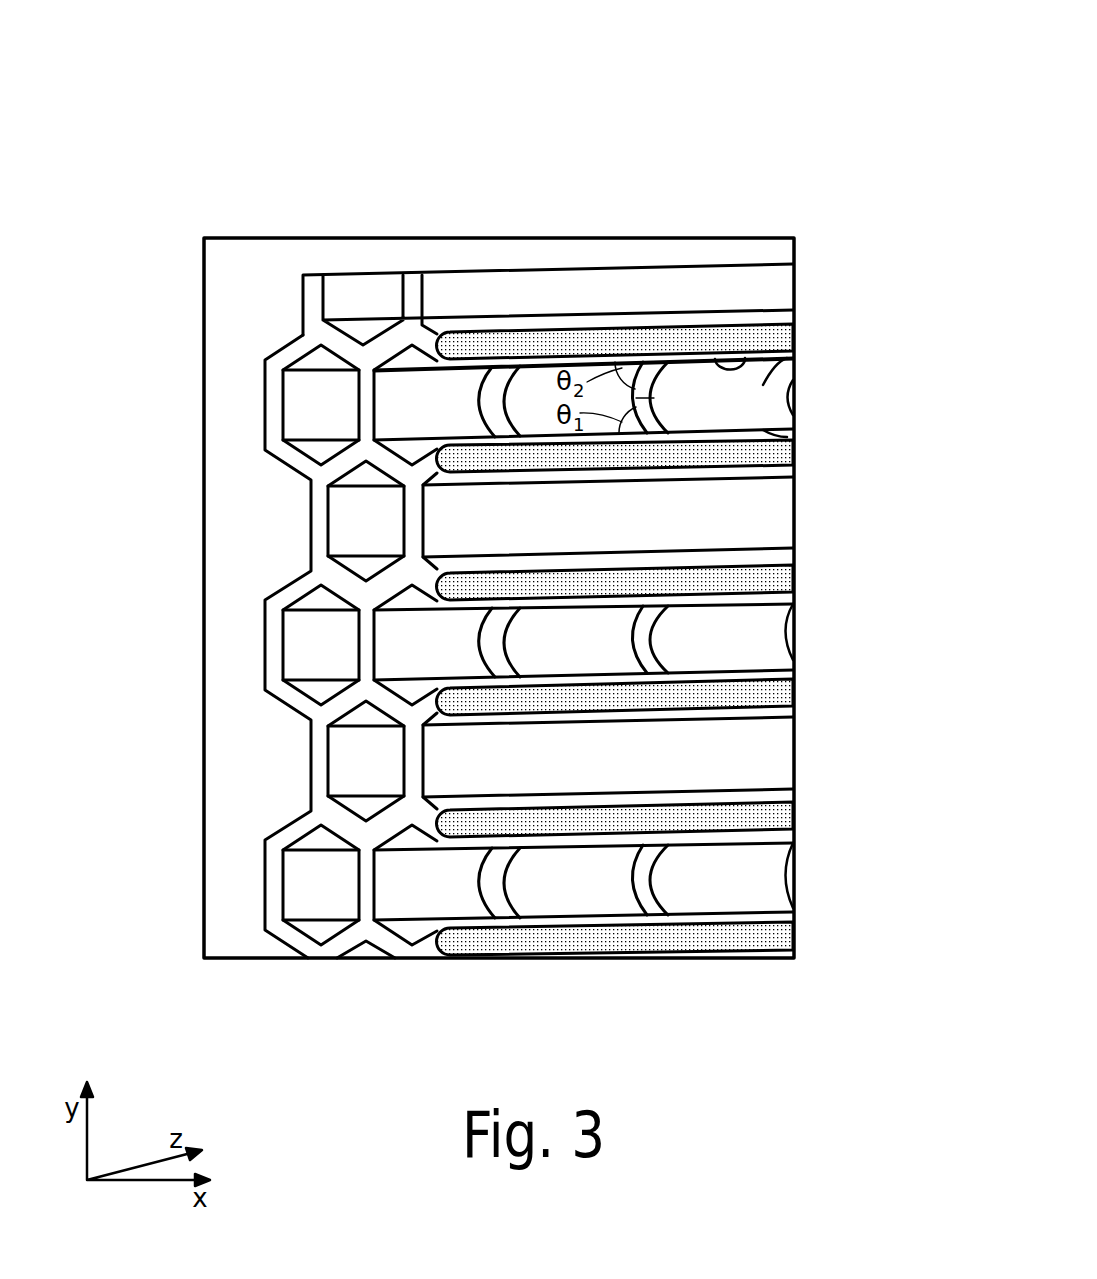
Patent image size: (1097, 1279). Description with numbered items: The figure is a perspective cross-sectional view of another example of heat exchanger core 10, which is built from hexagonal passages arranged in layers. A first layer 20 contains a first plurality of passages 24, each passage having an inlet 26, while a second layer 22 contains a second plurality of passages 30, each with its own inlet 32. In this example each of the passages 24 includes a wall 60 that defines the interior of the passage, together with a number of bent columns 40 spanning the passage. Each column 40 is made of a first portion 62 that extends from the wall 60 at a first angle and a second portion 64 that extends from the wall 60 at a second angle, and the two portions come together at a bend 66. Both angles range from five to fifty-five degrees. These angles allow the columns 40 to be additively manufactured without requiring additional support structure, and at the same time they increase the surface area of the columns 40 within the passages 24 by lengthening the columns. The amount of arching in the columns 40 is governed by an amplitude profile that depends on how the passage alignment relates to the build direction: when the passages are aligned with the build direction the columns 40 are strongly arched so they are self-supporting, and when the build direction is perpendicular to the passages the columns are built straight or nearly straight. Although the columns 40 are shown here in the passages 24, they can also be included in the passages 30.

The heat exchanger core 10 is at (537, 485).
The first layer 20 is at (778, 348).
The second layer 22 is at (722, 508).
The passage 24 is at (398, 405).
The inlet 26 is at (399, 383).
The passage 30 is at (455, 518).
The inlet 32 is at (367, 560).
The column 40 is at (500, 370).
The wall 60 is at (763, 370).
The first portion 62 is at (745, 442).
The second portion 64 is at (652, 367).
The bend 66 is at (652, 397).